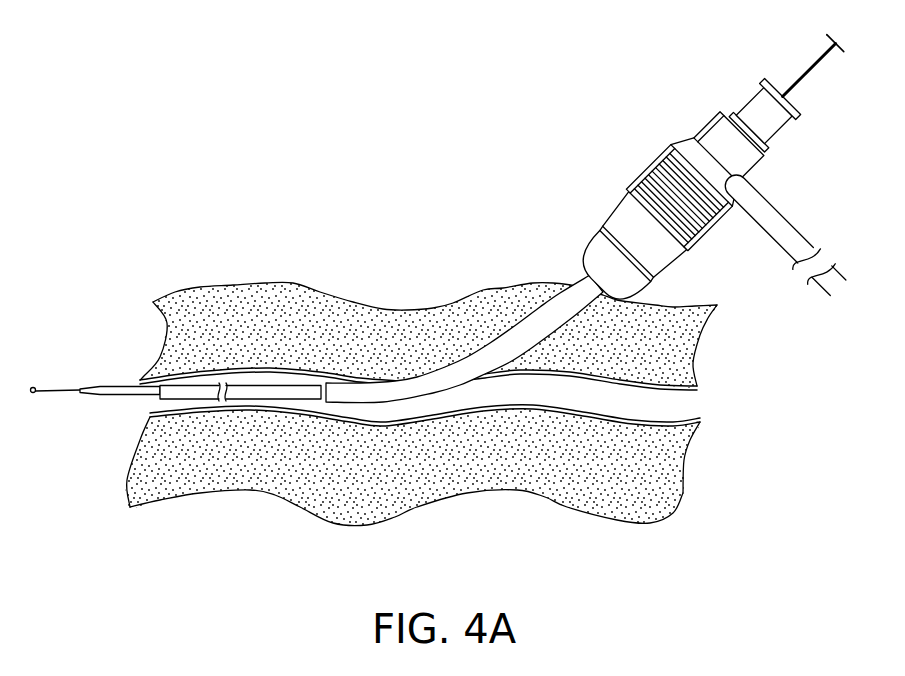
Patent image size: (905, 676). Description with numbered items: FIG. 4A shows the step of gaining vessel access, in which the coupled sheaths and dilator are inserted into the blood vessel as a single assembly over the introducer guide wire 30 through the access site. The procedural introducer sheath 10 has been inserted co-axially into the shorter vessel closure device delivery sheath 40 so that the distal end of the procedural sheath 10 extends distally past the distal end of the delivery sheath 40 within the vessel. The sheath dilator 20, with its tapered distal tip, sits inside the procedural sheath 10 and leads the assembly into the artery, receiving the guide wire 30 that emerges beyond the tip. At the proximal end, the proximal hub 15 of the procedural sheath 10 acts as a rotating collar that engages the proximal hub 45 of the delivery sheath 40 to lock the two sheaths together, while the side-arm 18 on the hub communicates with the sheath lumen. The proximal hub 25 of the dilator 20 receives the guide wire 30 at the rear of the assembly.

The procedural introducer sheath 10 is at (257, 384).
The proximal hub 15 is at (648, 167).
The side-arm 18 is at (796, 232).
The sheath dilator 20 is at (115, 398).
The proximal hub 25 is at (773, 133).
The introducer guidewire 30 is at (800, 85).
The vessel closure device delivery sheath 40 is at (515, 347).
The proximal hub 45 is at (617, 210).